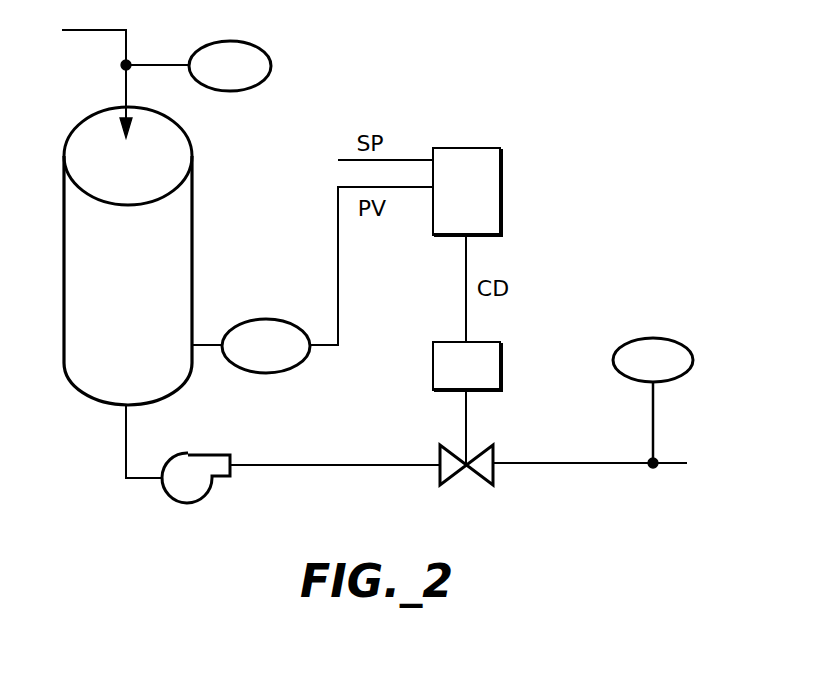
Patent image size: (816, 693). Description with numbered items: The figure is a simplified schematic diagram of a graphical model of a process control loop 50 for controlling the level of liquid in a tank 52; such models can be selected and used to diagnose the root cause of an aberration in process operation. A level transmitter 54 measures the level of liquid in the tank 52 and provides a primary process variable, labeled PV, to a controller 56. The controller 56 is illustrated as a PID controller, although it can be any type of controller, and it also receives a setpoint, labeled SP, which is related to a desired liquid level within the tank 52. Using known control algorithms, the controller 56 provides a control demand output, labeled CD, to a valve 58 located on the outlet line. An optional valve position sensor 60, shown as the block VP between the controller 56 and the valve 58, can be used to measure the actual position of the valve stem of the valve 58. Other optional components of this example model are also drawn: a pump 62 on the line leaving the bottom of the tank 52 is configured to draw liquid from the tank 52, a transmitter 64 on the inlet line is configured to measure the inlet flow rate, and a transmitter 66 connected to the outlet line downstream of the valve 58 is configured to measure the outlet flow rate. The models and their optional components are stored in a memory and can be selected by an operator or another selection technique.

The process control loop 50 is at (600, 107).
The tank 52 is at (192, 220).
The level transmitter 54 is at (250, 318).
The controller 56 is at (467, 148).
The valve 58 is at (495, 455).
The valve position sensor 60 is at (500, 366).
The pump 62 is at (193, 452).
The transmitter 64 is at (225, 40).
The transmitter 66 is at (658, 338).